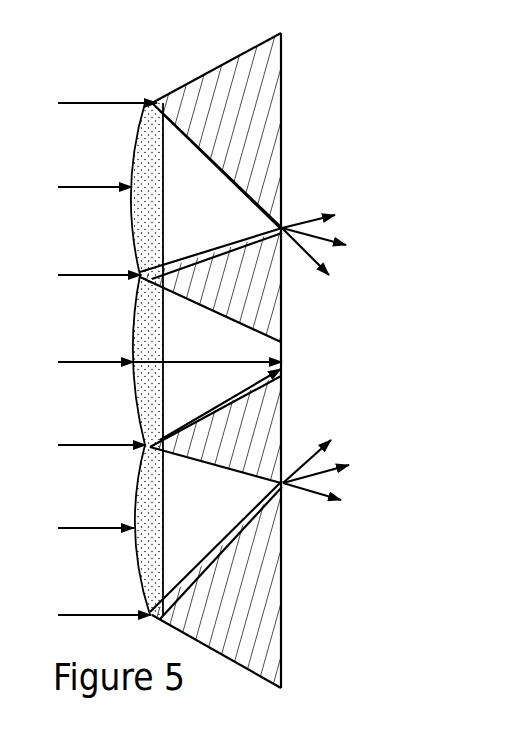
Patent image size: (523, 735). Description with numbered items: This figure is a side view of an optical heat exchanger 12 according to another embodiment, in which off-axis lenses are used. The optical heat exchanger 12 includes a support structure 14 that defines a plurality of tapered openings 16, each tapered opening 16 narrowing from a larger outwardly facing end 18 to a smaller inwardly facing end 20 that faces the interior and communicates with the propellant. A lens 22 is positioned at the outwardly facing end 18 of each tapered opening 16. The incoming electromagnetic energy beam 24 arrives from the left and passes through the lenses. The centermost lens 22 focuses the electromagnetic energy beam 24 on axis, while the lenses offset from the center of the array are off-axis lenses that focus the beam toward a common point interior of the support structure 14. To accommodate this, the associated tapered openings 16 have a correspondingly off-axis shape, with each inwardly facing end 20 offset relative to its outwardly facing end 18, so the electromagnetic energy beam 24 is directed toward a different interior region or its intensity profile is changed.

The optical heat exchanger 12 is at (316, 51).
The support structure 14 is at (263, 146).
The tapered opening 16 is at (202, 227).
The outwardly facing end 18 is at (170, 498).
The inwardly facing end 20 is at (290, 495).
The lens 22 is at (150, 137).
The electromagnetic energy beam 24 is at (97, 103).